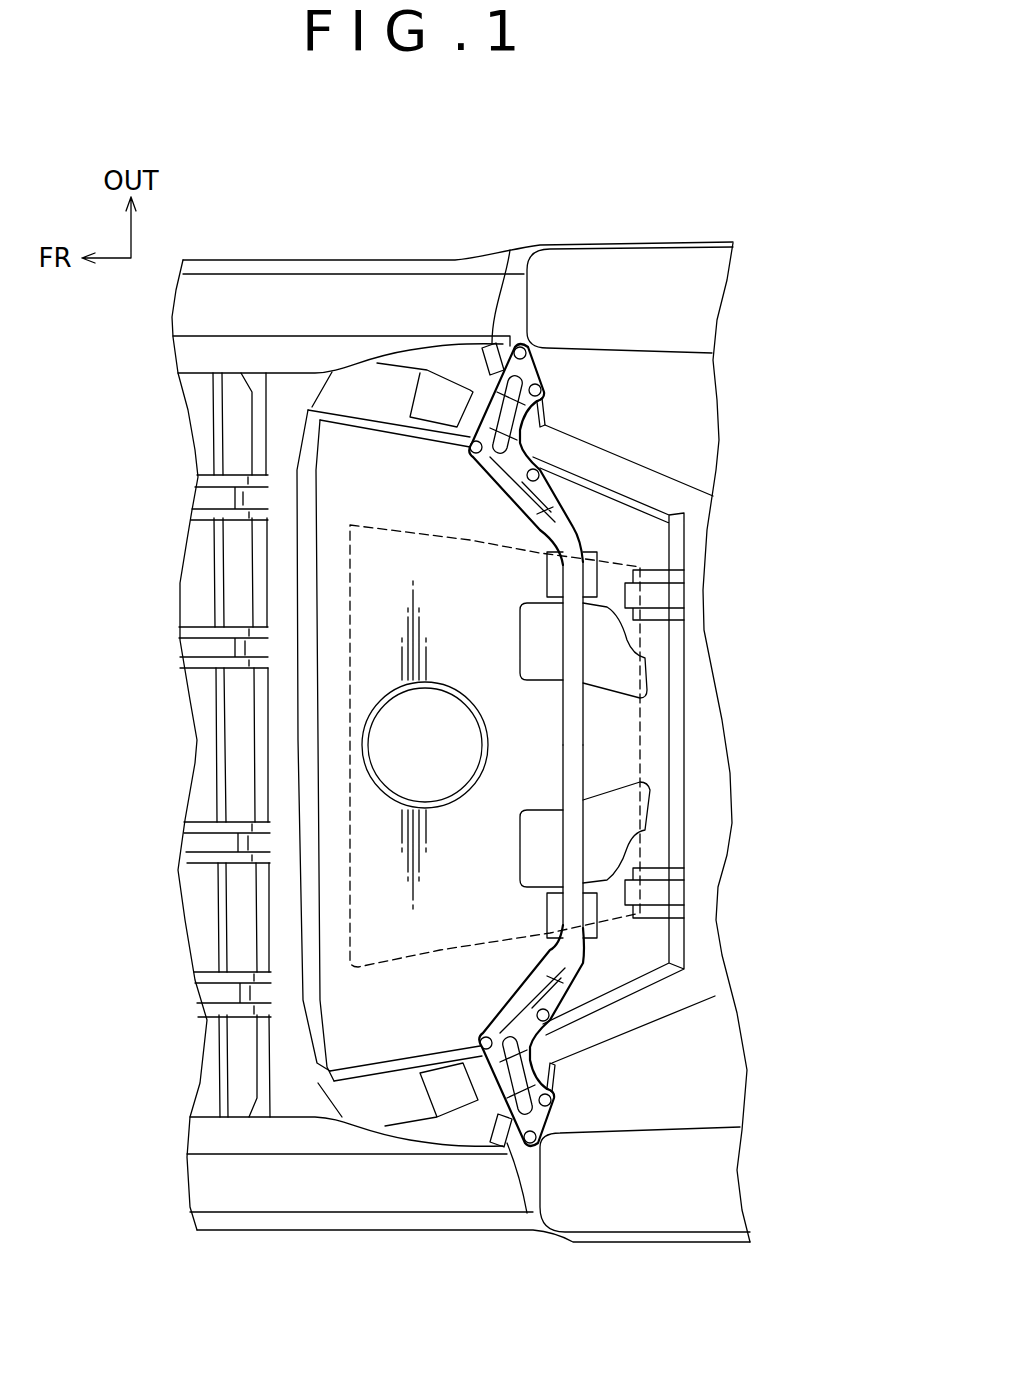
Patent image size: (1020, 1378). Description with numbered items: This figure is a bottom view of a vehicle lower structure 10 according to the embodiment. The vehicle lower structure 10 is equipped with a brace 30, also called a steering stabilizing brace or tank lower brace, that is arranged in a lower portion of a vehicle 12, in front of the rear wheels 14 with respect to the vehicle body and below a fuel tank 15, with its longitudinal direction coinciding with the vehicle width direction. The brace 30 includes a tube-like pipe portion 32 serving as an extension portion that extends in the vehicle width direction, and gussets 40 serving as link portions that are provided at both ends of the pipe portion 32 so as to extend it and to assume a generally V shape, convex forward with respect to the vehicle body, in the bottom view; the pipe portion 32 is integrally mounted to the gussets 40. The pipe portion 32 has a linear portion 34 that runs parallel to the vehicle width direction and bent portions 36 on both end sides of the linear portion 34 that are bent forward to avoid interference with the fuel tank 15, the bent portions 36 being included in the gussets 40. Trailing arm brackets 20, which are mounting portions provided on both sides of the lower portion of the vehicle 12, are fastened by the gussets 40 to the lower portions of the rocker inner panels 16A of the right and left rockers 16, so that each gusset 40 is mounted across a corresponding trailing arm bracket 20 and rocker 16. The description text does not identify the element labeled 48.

The vehicle lower structure 10 is at (462, 506).
The vehicle 12 is at (440, 243).
The rear wheels 14 is at (631, 268).
The fuel tank 15 is at (352, 903).
The rockers 16 is at (377, 304).
The rocker inner panels 16A is at (510, 250).
The trailing arm brackets 20 is at (548, 410).
The brace 30 is at (628, 745).
The pipe portion 32 is at (552, 712).
The linear portion 34 is at (568, 770).
The bent portions 36 is at (690, 538).
The gussets 40 is at (565, 477).
The cross beam 48 is at (470, 447).